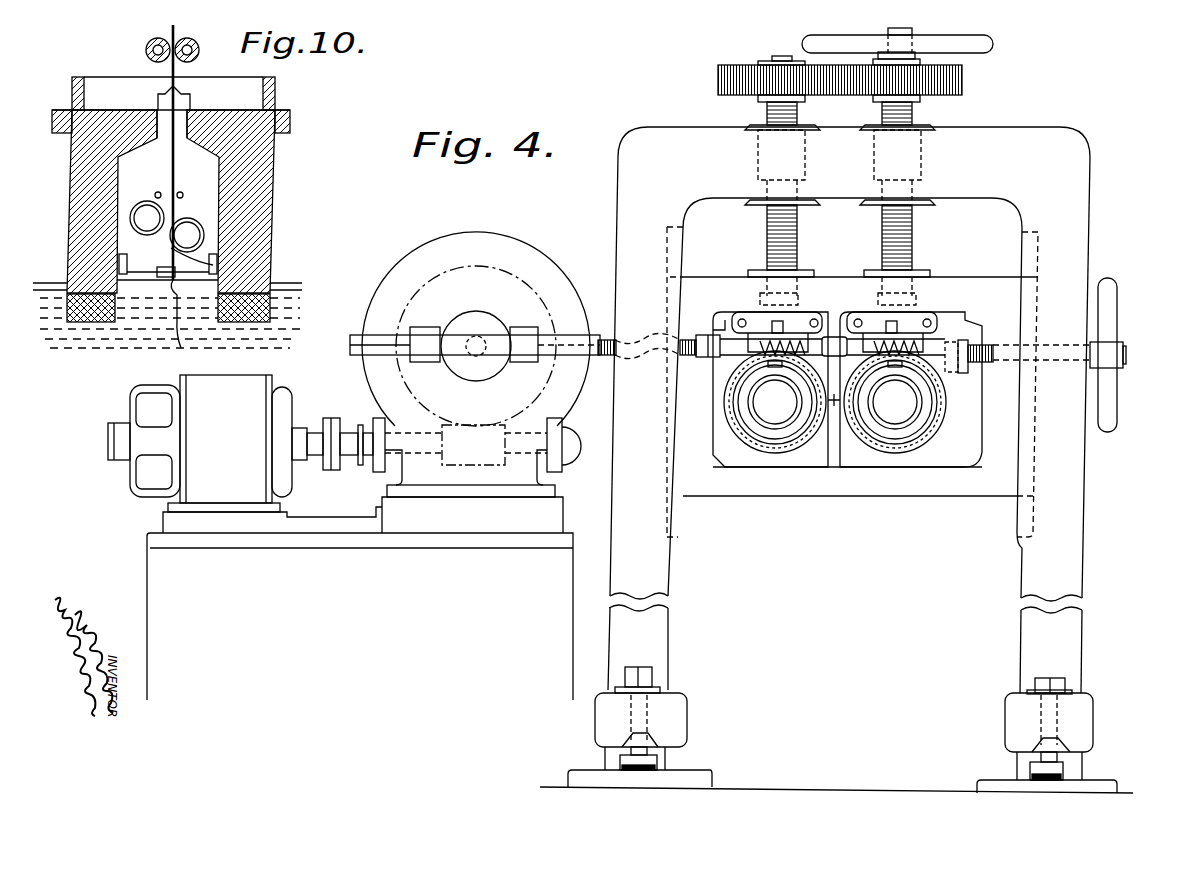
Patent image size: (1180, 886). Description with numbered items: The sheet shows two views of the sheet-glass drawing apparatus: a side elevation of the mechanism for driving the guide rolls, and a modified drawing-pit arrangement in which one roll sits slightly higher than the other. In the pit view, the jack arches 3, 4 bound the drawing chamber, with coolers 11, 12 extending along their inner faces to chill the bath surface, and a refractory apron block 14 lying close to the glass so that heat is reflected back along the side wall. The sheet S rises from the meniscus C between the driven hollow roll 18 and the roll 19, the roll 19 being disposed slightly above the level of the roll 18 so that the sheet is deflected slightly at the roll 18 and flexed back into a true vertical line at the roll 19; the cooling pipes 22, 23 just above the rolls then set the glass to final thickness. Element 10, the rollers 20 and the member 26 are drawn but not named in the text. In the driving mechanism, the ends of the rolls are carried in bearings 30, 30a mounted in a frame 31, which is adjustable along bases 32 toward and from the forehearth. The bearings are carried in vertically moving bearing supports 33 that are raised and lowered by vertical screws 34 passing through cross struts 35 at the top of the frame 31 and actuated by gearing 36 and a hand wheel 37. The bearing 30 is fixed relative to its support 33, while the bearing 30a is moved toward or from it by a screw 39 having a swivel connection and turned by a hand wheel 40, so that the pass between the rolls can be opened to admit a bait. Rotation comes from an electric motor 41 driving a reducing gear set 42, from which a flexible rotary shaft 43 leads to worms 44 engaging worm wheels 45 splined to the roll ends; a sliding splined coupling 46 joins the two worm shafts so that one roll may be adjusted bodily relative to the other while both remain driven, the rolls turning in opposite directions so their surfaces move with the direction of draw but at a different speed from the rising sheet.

In FIG. 10, the jack arch 3 is at (72, 199).
In FIG. 10, the jack arch 4 is at (268, 193).
In FIG. 10, the bath liquid 10 is at (170, 335).
In FIG. 10, the cooler 11 is at (119, 262).
In FIG. 10, the cooler 12 is at (217, 263).
In FIG. 10, the refractory apron block 14 is at (154, 274).
In FIG. 10, the guide roll 18 is at (205, 233).
In FIG. 4, the guide roll 18 is at (895, 402).
In FIG. 10, the roll 19 is at (131, 221).
In FIG. 4, the roll 19 is at (775, 402).
In FIG. 10, the feed rollers 20 is at (191, 41).
In FIG. 10, the cooling pipe 22 is at (183, 193).
In FIG. 10, the cooling pipe 23 is at (157, 193).
In FIG. 10, the guide wire 26 is at (216, 262).
In FIG. 10, the sheet S is at (176, 157).
In FIG. 10, the meniscus C is at (183, 324).
In FIG. 4, the bearing 30 is at (781, 470).
In FIG. 4, the bearing 30a is at (958, 400).
In FIG. 4, the frame 31 is at (1072, 488).
In FIG. 4, the base 32 is at (667, 755).
In FIG. 4, the bearing support 33 is at (863, 487).
In FIG. 4, the vertical screw 34 is at (767, 240).
In FIG. 4, the cross strut 35 is at (854, 332).
In FIG. 4, the gearing 36 is at (746, 95).
In FIG. 4, the hand wheel 37 is at (993, 45).
In FIG. 4, the screw 39 is at (978, 338).
In FIG. 4, the hand wheel 40 is at (1110, 330).
In FIG. 4, the electric motor 41 is at (340, 537).
In FIG. 4, the reducing gear set 42 is at (433, 418).
In FIG. 4, the flexible rotary shaft 43 is at (633, 343).
In FIG. 4, the worm 44 is at (772, 343).
In FIG. 4, the worm wheel 45 is at (728, 398).
In FIG. 4, the sliding splined coupling 46 is at (833, 337).